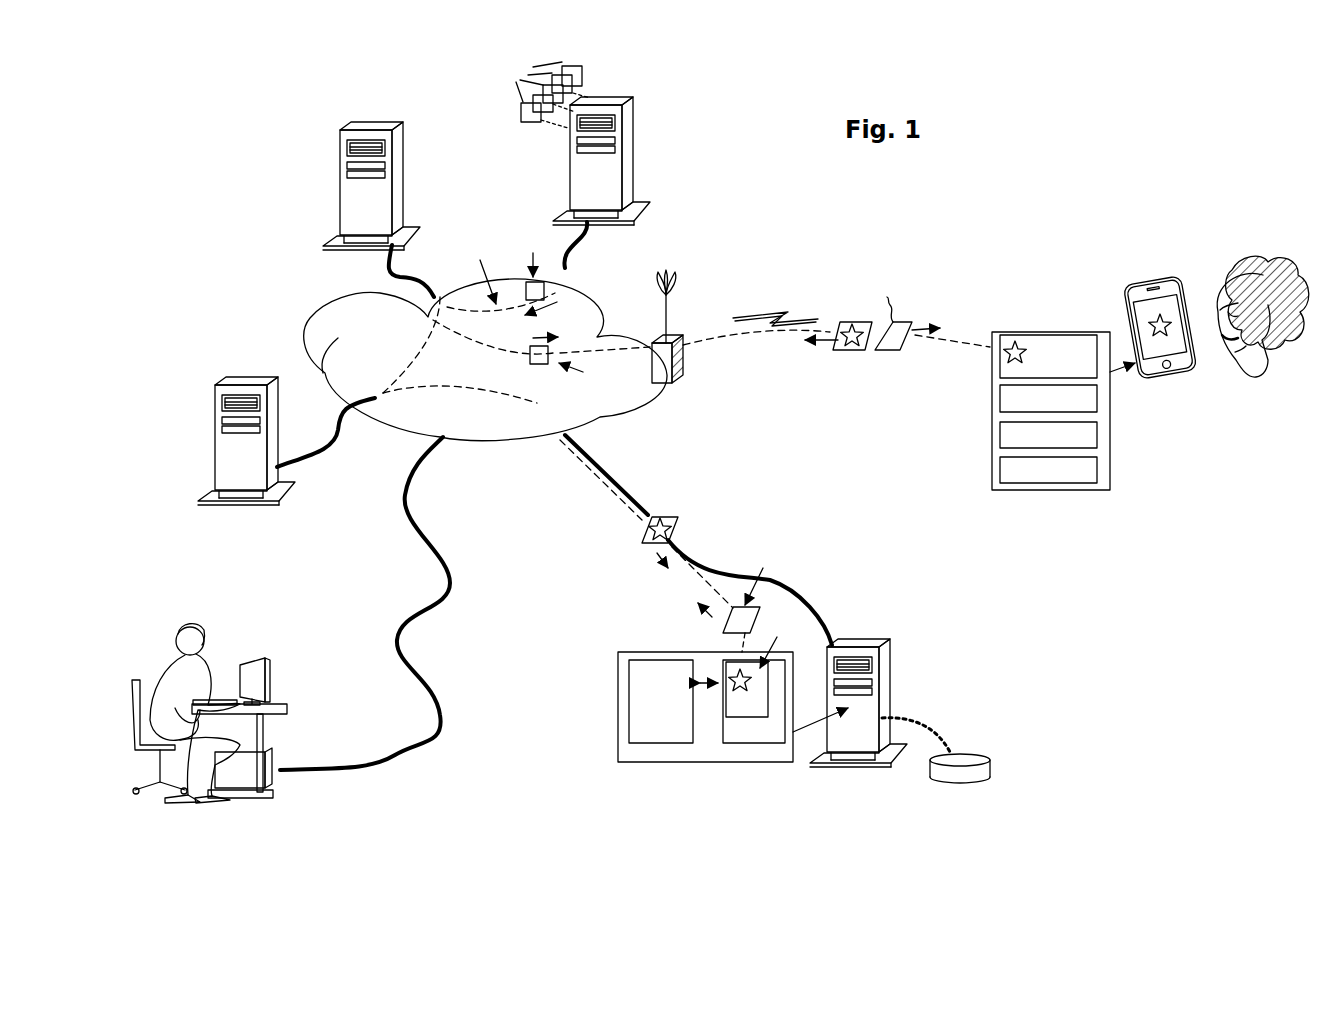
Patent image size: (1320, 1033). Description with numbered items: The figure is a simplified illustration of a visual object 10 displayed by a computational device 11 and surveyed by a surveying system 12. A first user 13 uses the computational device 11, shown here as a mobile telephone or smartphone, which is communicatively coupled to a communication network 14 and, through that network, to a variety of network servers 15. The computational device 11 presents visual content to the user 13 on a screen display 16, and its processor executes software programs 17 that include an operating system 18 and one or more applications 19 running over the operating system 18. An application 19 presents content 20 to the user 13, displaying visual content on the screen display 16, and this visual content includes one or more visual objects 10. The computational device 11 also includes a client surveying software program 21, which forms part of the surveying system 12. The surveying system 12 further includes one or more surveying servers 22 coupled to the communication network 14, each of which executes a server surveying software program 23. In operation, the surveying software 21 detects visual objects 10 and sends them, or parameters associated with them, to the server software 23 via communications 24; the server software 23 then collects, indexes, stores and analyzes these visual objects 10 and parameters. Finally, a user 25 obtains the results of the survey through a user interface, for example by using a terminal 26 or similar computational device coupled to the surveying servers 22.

The visual object 10 is at (1013, 340).
The computational device 11 is at (1147, 326).
The surveying system 12 is at (1040, 530).
The first user 13 is at (1268, 256).
The communication network 14 is at (308, 330).
The network servers 15 is at (400, 210).
The screen display 16 is at (1141, 300).
The software programs 17 is at (1025, 412).
The operating system 18 is at (1003, 470).
The application 19 is at (1003, 398).
The content 20 is at (1050, 345).
The client surveying software program 21 is at (1003, 435).
The surveying server 22 is at (888, 640).
The server surveying software program 23 is at (757, 745).
The communications 24 is at (850, 352).
The user 25 is at (191, 625).
The terminal 26 is at (278, 760).